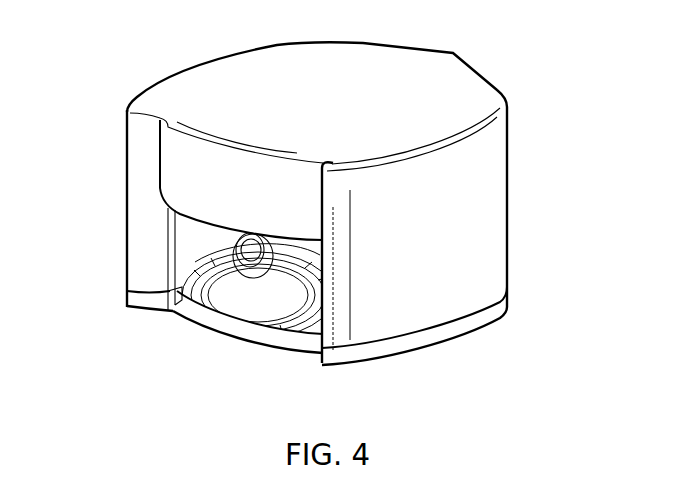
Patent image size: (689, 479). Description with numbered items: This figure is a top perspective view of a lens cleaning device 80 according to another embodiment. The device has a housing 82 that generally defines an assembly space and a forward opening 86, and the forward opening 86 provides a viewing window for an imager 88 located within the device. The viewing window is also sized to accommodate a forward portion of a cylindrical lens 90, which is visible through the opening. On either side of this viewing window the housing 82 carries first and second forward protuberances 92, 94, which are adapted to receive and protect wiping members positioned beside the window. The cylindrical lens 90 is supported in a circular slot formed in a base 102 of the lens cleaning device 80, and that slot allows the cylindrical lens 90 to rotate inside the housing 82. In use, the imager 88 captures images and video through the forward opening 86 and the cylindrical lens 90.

The lens cleaning device 80 is at (527, 44).
The housing 82 is at (485, 223).
The forward opening 86 is at (182, 287).
The imager 88 is at (280, 248).
The cylindrical lens 90 is at (200, 313).
The first forward protuberance 92 is at (137, 260).
The second forward protuberance 94 is at (332, 337).
The base 102 is at (443, 335).